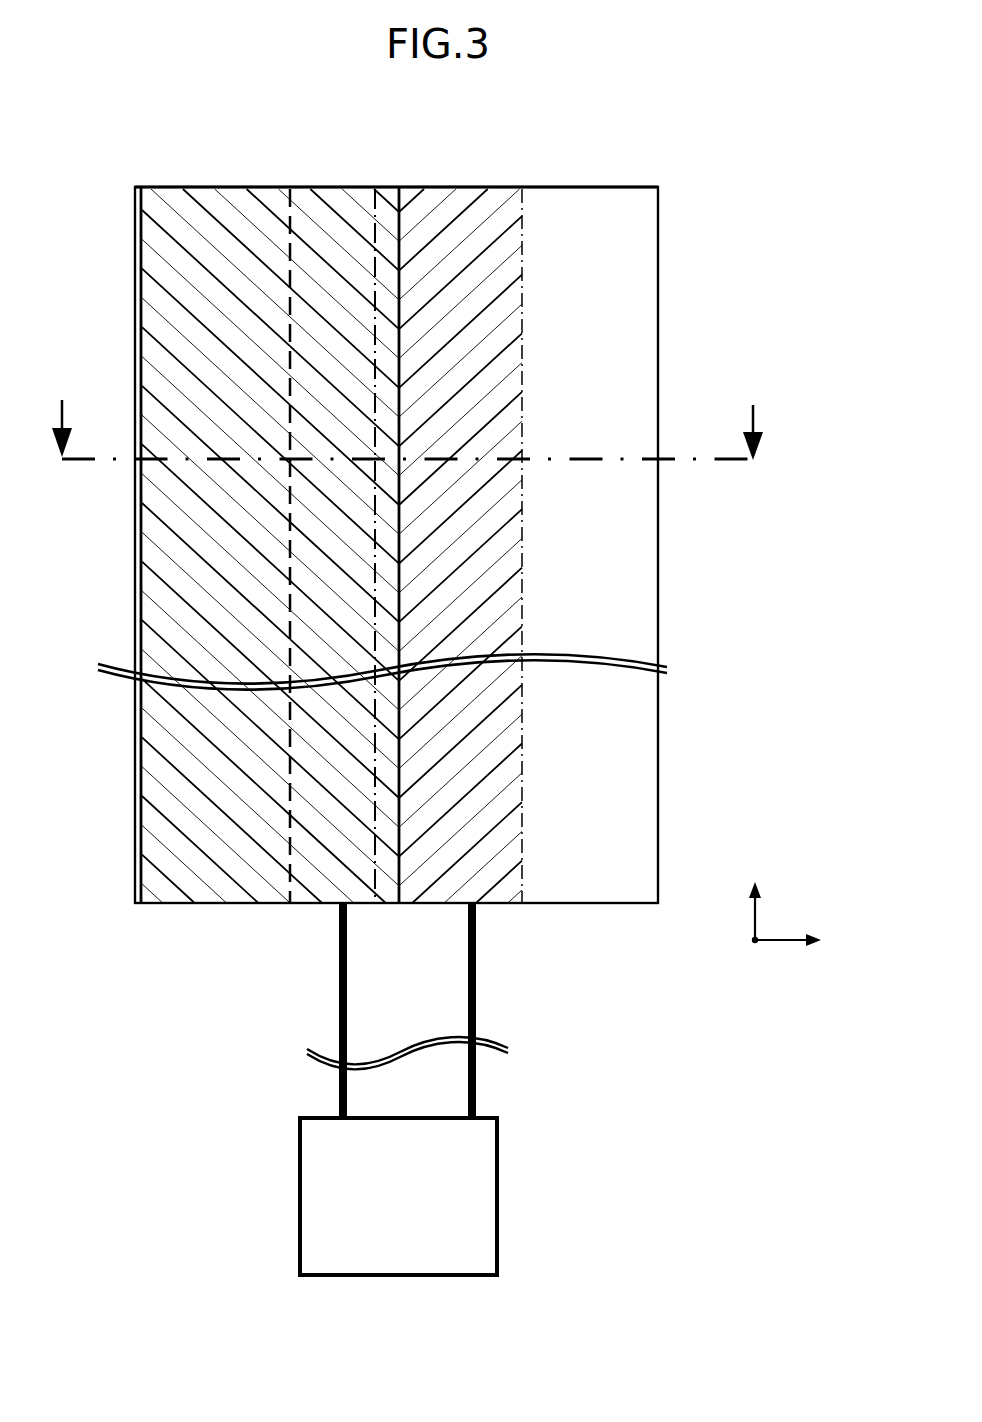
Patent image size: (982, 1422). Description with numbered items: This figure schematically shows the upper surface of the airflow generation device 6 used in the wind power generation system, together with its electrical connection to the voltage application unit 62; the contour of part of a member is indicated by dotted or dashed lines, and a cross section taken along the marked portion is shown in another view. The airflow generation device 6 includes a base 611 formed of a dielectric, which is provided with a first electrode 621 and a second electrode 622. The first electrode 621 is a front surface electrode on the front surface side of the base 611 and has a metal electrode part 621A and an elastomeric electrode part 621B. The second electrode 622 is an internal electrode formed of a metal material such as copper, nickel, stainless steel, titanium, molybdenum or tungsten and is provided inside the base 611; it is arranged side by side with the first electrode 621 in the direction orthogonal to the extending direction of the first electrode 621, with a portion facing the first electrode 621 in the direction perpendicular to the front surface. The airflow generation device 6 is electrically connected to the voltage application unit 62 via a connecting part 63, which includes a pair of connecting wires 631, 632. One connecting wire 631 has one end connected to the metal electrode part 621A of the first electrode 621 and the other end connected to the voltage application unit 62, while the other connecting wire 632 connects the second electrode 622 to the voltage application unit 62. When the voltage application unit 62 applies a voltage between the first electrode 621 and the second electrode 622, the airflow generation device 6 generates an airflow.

The airflow generation device 6 is at (436, 126).
The base 611 is at (647, 248).
The first electrode 621 is at (270, 500).
The metal electrode part 621A is at (344, 514).
The elastomeric electrode part 621B is at (192, 203).
The second electrode 622 is at (524, 186).
The connecting part 63 is at (365, 1010).
The one connecting wire 631 is at (343, 988).
The other connecting wire 632 is at (472, 957).
The voltage application unit 62 is at (307, 1197).